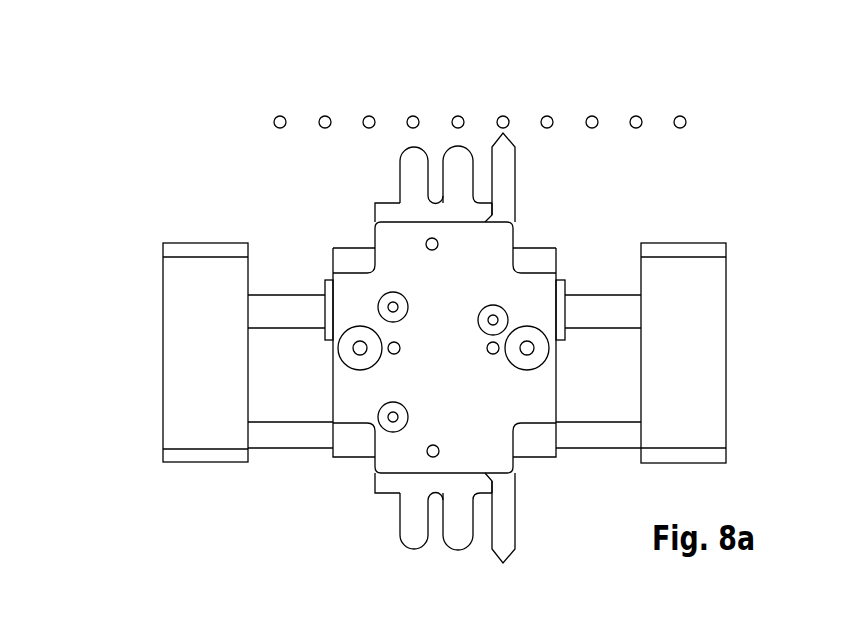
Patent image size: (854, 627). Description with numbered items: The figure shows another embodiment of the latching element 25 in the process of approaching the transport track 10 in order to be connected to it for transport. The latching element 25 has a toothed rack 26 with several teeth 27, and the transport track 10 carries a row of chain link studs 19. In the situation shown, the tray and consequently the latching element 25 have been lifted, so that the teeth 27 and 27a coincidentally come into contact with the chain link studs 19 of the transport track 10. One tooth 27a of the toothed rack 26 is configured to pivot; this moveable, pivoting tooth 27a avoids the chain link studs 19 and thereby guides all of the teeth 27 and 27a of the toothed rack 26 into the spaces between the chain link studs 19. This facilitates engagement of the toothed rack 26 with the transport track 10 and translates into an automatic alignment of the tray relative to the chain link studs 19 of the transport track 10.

The transport track 10 is at (308, 111).
The chain link studs 19 is at (503, 116).
The latching element 25 is at (134, 382).
The toothed rack 26 is at (384, 203).
The teeth 27 is at (412, 165).
The pivoting tooth 27a is at (507, 200).